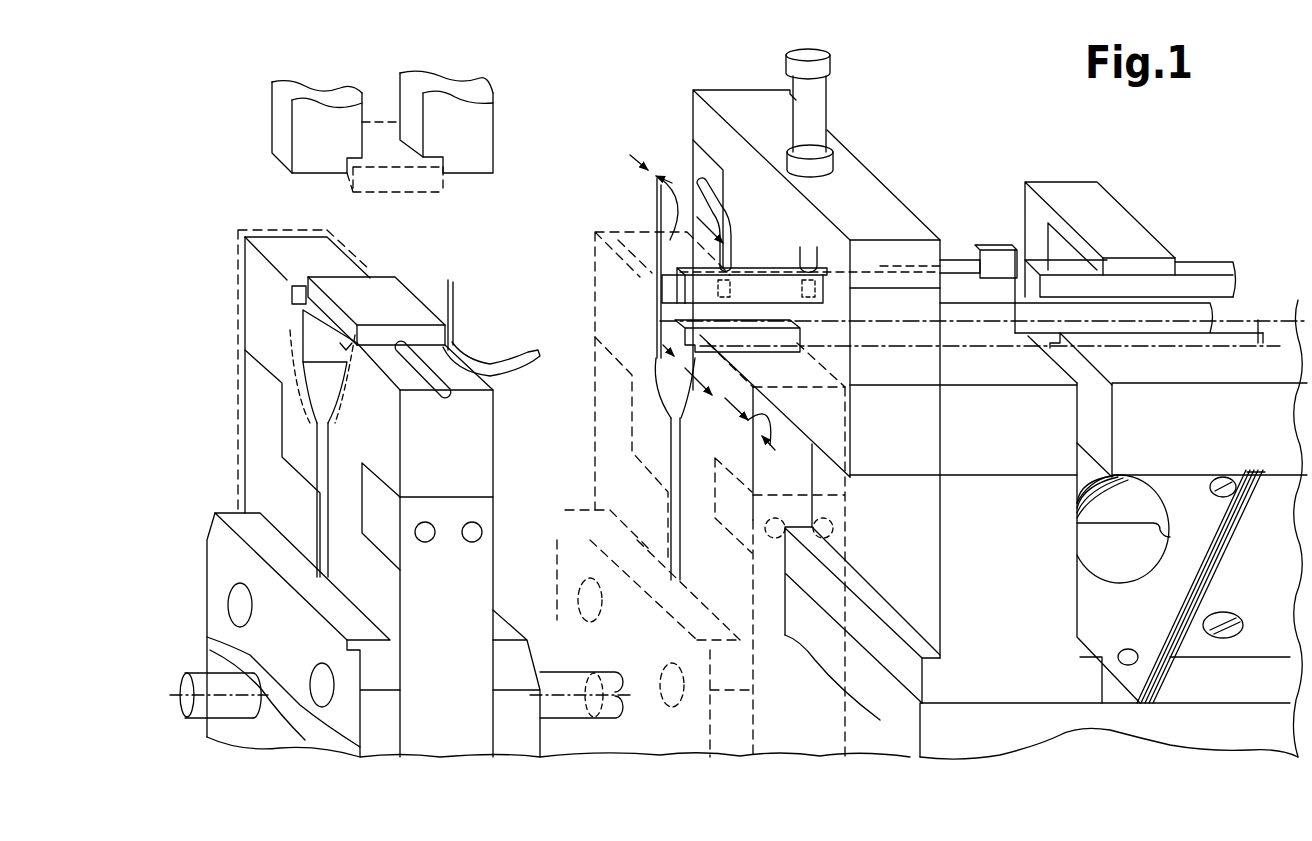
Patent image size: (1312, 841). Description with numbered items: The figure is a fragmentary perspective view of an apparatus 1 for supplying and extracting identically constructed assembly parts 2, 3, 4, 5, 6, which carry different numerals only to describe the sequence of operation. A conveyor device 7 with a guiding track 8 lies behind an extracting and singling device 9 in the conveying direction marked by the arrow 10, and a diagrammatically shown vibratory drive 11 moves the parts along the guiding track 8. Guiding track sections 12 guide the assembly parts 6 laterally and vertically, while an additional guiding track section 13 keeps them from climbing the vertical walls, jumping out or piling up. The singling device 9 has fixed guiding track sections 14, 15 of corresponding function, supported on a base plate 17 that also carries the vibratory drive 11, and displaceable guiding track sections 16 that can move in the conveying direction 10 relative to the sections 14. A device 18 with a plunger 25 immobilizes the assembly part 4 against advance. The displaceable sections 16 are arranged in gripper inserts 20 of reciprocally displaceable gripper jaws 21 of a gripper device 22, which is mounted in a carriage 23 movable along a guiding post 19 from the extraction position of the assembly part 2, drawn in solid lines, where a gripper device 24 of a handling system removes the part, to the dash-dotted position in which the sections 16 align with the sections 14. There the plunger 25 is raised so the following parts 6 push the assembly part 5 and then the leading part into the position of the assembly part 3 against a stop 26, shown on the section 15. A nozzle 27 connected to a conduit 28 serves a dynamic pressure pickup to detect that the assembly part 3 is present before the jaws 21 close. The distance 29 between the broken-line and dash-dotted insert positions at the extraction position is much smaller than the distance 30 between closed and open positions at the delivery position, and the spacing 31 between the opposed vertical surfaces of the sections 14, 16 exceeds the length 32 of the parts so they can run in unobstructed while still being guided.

The apparatus 1 is at (1172, 132).
The assembly part 2 is at (402, 290).
The assembly part 3 is at (655, 260).
The assembly part 4 is at (723, 172).
The assembly part 5 is at (972, 265).
The assembly part 6 is at (1140, 255).
The conveyor device 7 is at (1295, 362).
The guiding track 8 is at (1260, 298).
The extracting and singling device 9 is at (677, 130).
The conveying direction 10 is at (935, 98).
The vibratory drive 11 is at (1225, 558).
The guiding track sections 12 is at (1215, 300).
The additional guiding track section 13 is at (1192, 300).
The fixed guiding track sections 14 is at (950, 260).
The fixed guiding track section 15 is at (995, 265).
The displaceable guiding track sections 16 is at (300, 300).
The base plate 17 is at (1047, 730).
The device for retaining the assembly parts 18 is at (820, 108).
The guiding post 19 is at (205, 685).
The gripper inserts 20 is at (340, 262).
The gripper jaws 21 is at (260, 400).
The gripper device 22 is at (228, 500).
The carriage 23 is at (215, 650).
The gripper device of a handling system 24 is at (272, 165).
The plunger 25 is at (800, 252).
The stop 26 is at (660, 322).
The nozzle 27 is at (470, 372).
The conduit 28 is at (520, 410).
The distance 29 is at (660, 230).
The distance 30 is at (482, 310).
The spacing 31 is at (665, 368).
The length 32 is at (650, 195).